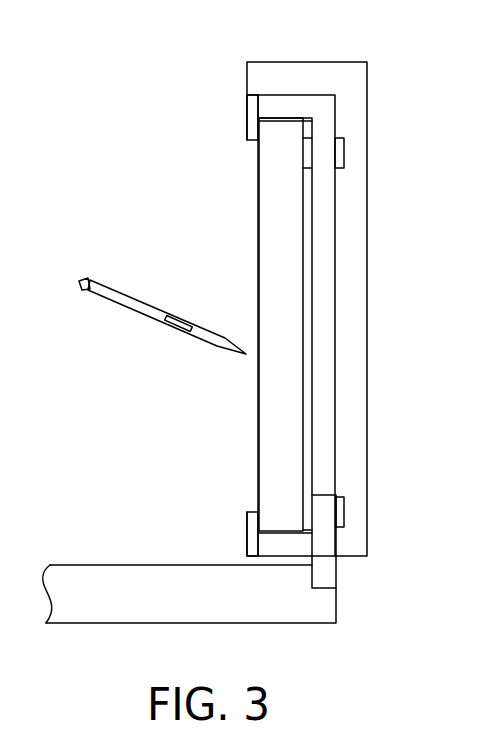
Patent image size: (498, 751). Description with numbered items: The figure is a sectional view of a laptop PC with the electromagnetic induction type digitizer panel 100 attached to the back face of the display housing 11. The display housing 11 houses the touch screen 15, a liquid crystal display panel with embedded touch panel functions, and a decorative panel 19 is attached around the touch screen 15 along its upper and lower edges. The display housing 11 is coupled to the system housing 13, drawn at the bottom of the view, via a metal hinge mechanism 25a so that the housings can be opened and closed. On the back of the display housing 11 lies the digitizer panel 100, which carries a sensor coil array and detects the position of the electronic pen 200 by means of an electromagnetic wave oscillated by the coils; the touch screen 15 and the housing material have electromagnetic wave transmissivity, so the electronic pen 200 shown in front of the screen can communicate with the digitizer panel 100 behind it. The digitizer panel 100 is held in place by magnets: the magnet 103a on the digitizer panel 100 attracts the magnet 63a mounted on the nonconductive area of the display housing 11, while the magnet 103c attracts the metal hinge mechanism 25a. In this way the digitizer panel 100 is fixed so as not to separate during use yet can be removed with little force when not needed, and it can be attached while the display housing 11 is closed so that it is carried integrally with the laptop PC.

The digitizer panel 100 is at (367, 62).
The display housing 11 is at (303, 107).
The decorative panel 19 is at (247, 122).
The touch screen 15 is at (259, 222).
The magnet 63a is at (307, 157).
The magnet 103a is at (344, 138).
The hinge mechanism 25a is at (325, 495).
The magnet 103c is at (344, 505).
The system housing 13 is at (122, 565).
The electronic pen 200 is at (122, 293).